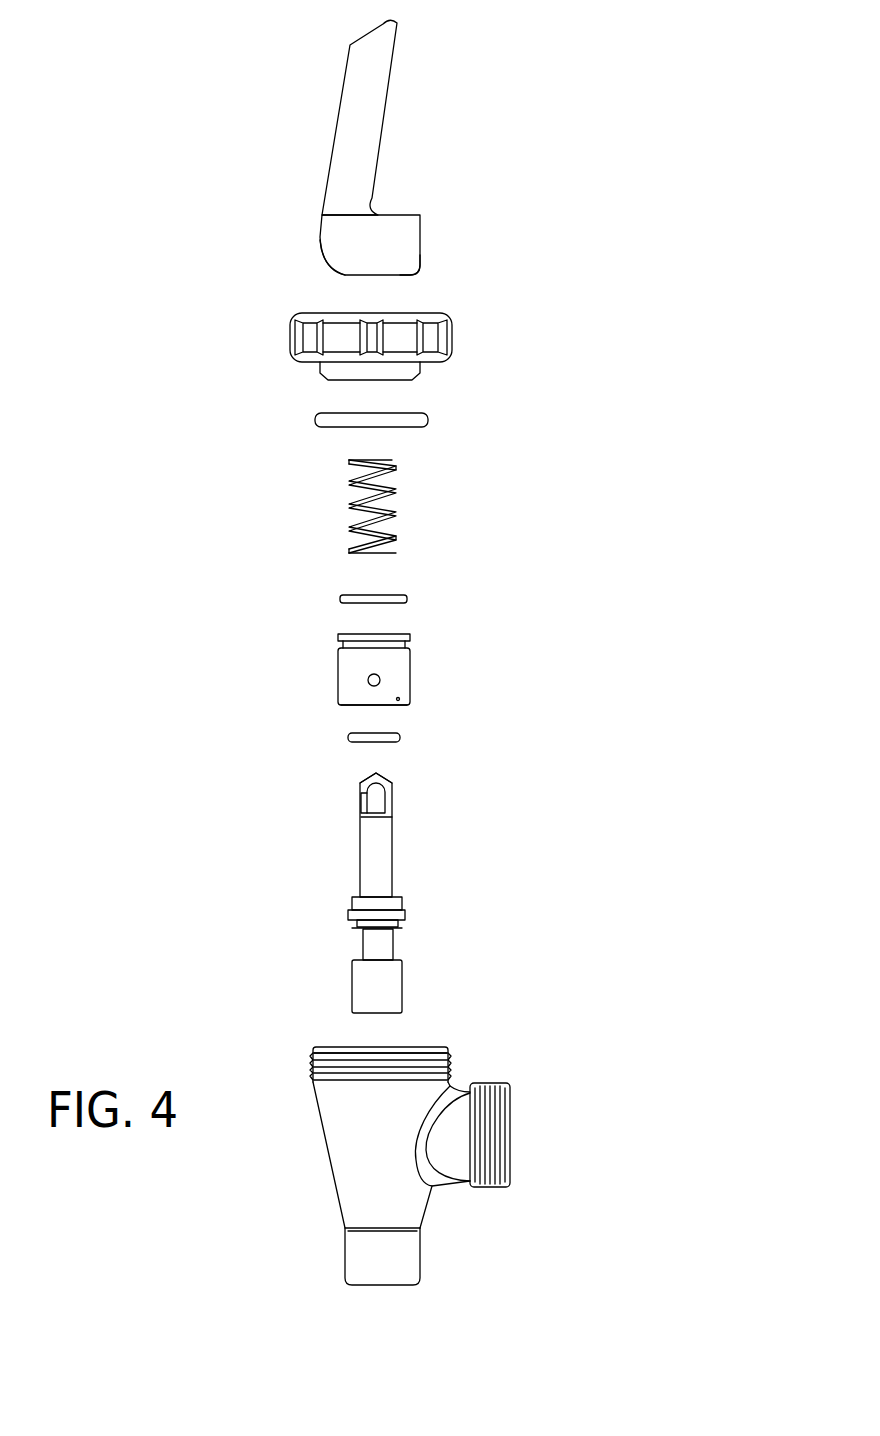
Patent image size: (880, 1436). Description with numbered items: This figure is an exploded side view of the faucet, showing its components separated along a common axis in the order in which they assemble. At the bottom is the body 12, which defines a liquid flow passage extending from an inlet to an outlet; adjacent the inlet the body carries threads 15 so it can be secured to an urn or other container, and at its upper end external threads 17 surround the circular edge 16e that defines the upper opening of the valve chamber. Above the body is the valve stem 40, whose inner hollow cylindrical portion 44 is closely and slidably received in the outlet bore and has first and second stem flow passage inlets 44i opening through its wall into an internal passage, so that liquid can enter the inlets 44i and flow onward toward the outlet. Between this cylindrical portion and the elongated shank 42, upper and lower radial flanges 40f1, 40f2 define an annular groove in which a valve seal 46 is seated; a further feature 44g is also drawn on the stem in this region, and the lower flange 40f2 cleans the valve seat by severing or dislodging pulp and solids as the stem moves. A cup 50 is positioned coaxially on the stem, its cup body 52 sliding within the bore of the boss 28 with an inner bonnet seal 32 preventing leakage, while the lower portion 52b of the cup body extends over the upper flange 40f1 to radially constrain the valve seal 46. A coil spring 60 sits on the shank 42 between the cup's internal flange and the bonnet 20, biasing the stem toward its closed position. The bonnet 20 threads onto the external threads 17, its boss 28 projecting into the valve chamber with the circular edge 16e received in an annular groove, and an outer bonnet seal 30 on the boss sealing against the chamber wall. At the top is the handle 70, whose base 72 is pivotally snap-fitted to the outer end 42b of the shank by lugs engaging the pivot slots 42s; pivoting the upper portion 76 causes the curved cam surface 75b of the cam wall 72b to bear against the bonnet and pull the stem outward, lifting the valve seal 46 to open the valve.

The body 12 is at (396, 1146).
The threads 15 is at (493, 1183).
The circular edge 16e is at (430, 1045).
The external threads 17 is at (315, 1058).
The bonnet 20 is at (450, 332).
The boss 28 is at (420, 368).
The outer bonnet seal 30 is at (427, 422).
The inner bonnet seal 32 is at (407, 597).
The valve stem 40 is at (383, 889).
The upper radial flange 40f1 is at (348, 912).
The lower radial flange 40f2 is at (360, 938).
The shank 42 is at (385, 833).
The outer end 42b is at (380, 775).
The pivot slots 42s is at (373, 793).
The inner hollow cylindrical portion 44 is at (395, 992).
The groove 44g is at (400, 922).
The stem flow passage inlets 44i is at (363, 948).
The valve seal 46 is at (400, 737).
The cup 50 is at (392, 683).
The cup body 52 is at (348, 678).
The lower portion 52b is at (410, 705).
The coil spring 60 is at (395, 515).
The handle 70 is at (373, 157).
The base 72 is at (412, 228).
The second cam wall 72b is at (412, 262).
The curved cam surface 75b is at (325, 262).
The upper portion 76 is at (377, 77).